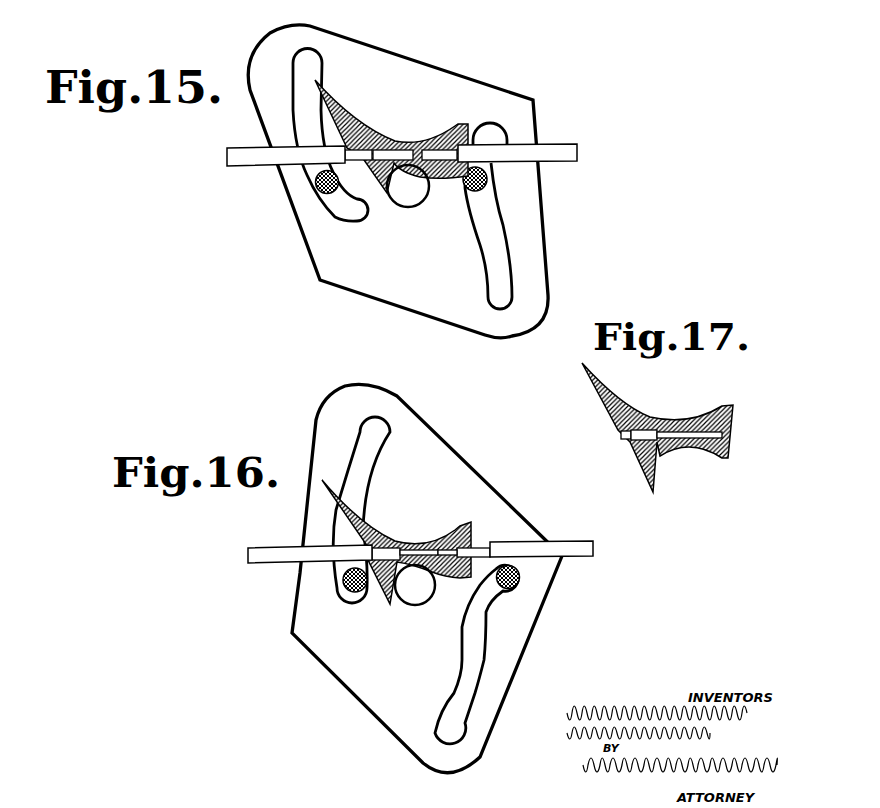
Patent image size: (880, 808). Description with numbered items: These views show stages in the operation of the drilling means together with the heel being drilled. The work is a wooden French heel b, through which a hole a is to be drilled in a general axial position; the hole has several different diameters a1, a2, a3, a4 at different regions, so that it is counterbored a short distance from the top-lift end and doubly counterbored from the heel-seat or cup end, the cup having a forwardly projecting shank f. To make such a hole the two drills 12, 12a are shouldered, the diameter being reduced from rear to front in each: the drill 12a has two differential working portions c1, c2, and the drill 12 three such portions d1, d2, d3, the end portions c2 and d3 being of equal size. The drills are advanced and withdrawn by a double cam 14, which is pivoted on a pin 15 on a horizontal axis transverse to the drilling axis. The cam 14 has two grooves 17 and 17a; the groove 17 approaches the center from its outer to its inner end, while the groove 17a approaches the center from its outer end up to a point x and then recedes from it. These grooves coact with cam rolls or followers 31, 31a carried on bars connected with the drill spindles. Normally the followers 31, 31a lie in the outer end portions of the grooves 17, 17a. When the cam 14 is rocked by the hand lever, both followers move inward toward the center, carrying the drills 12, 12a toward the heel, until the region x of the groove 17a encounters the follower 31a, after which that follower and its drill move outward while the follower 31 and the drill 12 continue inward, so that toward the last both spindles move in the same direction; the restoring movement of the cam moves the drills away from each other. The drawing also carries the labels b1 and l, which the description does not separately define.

In FIG. 15, the drill 12 is at (262, 152).
In FIG. 16, the drill 12 is at (292, 548).
In FIG. 15, the drill 12a is at (568, 143).
In FIG. 16, the drill 12a is at (560, 546).
In FIG. 15, the double cam 14 is at (368, 282).
In FIG. 15, the pin 15 is at (410, 207).
In FIG. 16, the pin 15 is at (416, 605).
In FIG. 15, the groove 17 is at (352, 213).
In FIG. 16, the groove 17 is at (362, 443).
In FIG. 15, the groove 17a is at (490, 284).
In FIG. 16, the groove 17a is at (463, 687).
In FIG. 15, the cam roll or follower 31 is at (318, 196).
In FIG. 16, the cam roll or follower 31 is at (358, 593).
In FIG. 15, the cam roll or follower 31a is at (478, 194).
In FIG. 16, the cam roll or follower 31a is at (513, 586).
In FIG. 15, the wooden French heel b is at (388, 132).
In FIG. 16, the wooden French heel b is at (397, 529).
In FIG. 17, the wooden French heel b is at (729, 408).
In FIG. 15, the cam end block b1 is at (467, 126).
In FIG. 16, the cam end block b1 is at (473, 577).
In FIG. 15, the differential working portion c1 is at (524, 152).
In FIG. 16, the differential working portion c1 is at (517, 543).
In FIG. 15, the differential working portion c2 is at (437, 147).
In FIG. 16, the differential working portion c2 is at (481, 547).
In FIG. 15, the differential working portion d1 is at (300, 157).
In FIG. 16, the differential working portion d1 is at (326, 557).
In FIG. 15, the differential working portion d2 is at (348, 146).
In FIG. 16, the differential working portion d2 is at (368, 536).
In FIG. 15, the differential working portion d3 is at (396, 168).
In FIG. 16, the differential working portion d3 is at (409, 570).
In FIG. 15, the cam lobe l is at (356, 118).
In FIG. 16, the cam lobe l is at (373, 508).
In FIG. 17, the cam lobe l is at (610, 387).
In FIG. 15, the shank of the cup f is at (386, 198).
In FIG. 16, the shank of the cup f is at (392, 603).
In FIG. 17, the shank of the cup f is at (652, 488).
In FIG. 15, the point of groove 17a x is at (488, 178).
In FIG. 16, the point of groove 17a x is at (487, 612).
In FIG. 17, the hole a is at (622, 433).
In FIG. 17, the hole diameter a1 is at (625, 440).
In FIG. 17, the hole diameter a2 is at (633, 455).
In FIG. 17, the hole diameter a3 is at (688, 440).
In FIG. 16, the hole diameter a4 is at (463, 522).
In FIG. 17, the hole diameter a4 is at (733, 436).